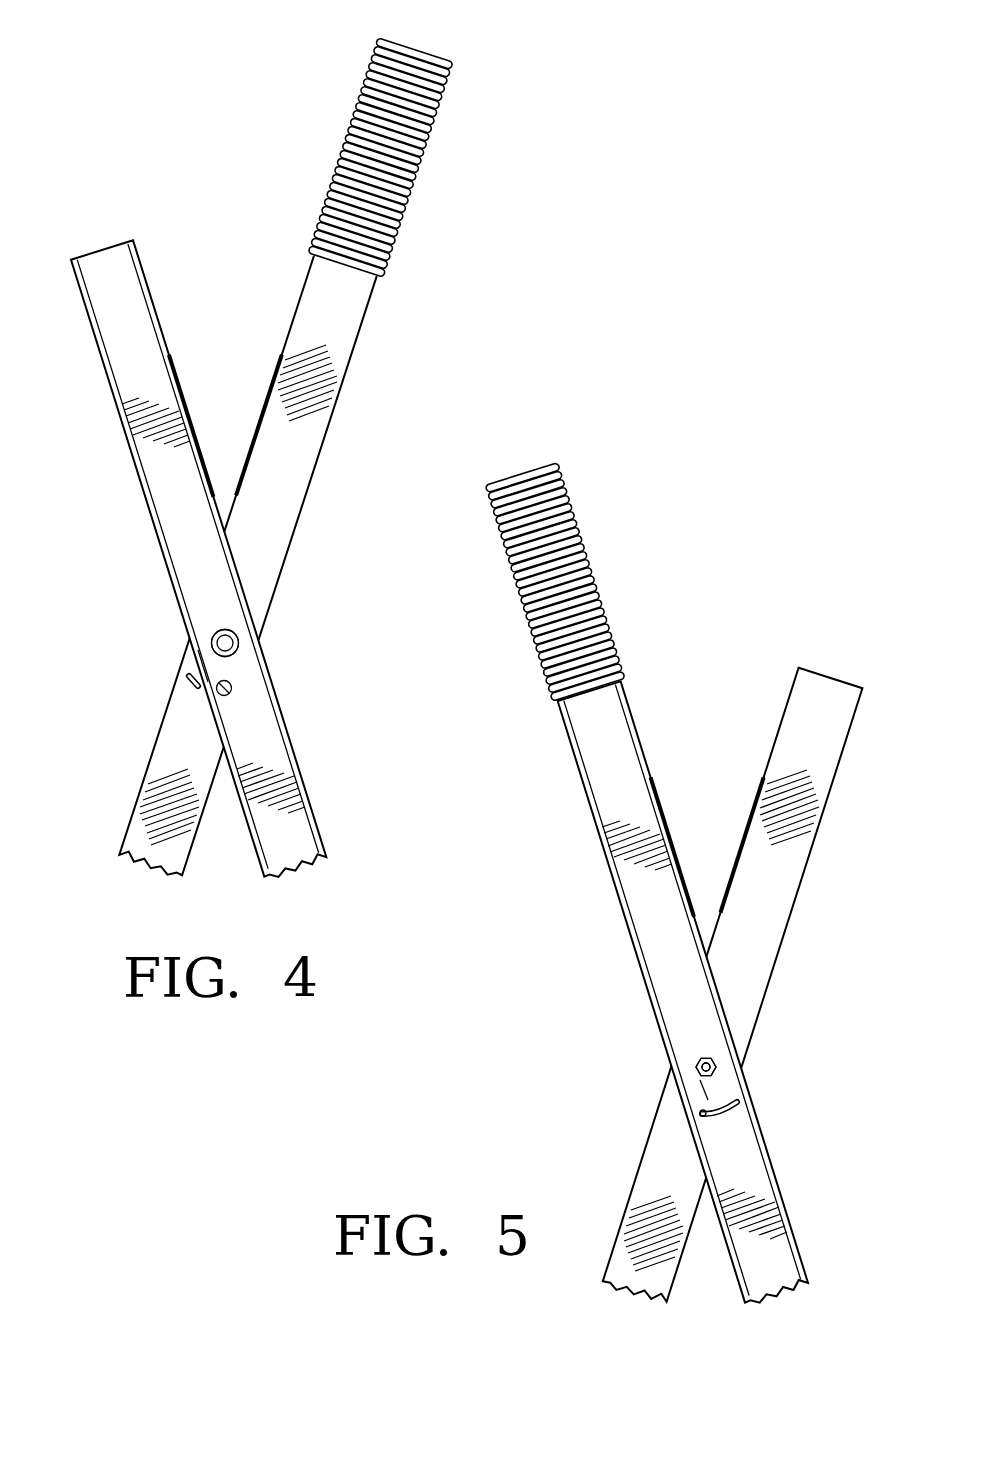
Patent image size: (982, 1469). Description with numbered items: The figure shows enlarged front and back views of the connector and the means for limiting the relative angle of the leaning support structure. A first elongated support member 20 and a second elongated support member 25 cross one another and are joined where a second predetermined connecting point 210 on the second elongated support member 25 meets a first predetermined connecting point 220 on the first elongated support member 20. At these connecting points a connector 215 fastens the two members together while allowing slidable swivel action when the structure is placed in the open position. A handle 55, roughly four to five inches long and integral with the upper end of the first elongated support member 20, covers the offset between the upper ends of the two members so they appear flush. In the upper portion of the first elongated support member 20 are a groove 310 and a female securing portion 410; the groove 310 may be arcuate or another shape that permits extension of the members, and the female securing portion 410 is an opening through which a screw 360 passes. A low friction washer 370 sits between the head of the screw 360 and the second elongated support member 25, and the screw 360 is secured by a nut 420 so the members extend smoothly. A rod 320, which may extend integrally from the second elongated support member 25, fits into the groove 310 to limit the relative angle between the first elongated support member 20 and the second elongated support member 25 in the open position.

In FIG. 4, the first elongated support member 20 is at (294, 458).
In FIG. 5, the first elongated support member 20 is at (567, 786).
In FIG. 4, the second elongated support member 25 is at (128, 477).
In FIG. 5, the second elongated support member 25 is at (824, 866).
In FIG. 4, the handle 55 is at (338, 145).
In FIG. 4, the second predetermined connecting point 210 is at (223, 665).
In FIG. 4, the connector 215 is at (204, 620).
In FIG. 5, the connector 215 is at (716, 1042).
In FIG. 5, the first predetermined connecting point 220 is at (710, 1087).
In FIG. 4, the groove 310 is at (197, 685).
In FIG. 5, the groove 310 is at (735, 1108).
In FIG. 4, the rod 320 is at (233, 688).
In FIG. 5, the rod 320 is at (703, 1108).
In FIG. 4, the screw 360 is at (229, 631).
In FIG. 4, the low friction washer 370 is at (238, 653).
In FIG. 5, the female securing portion 410 is at (715, 1075).
In FIG. 5, the nut 420 is at (703, 1058).